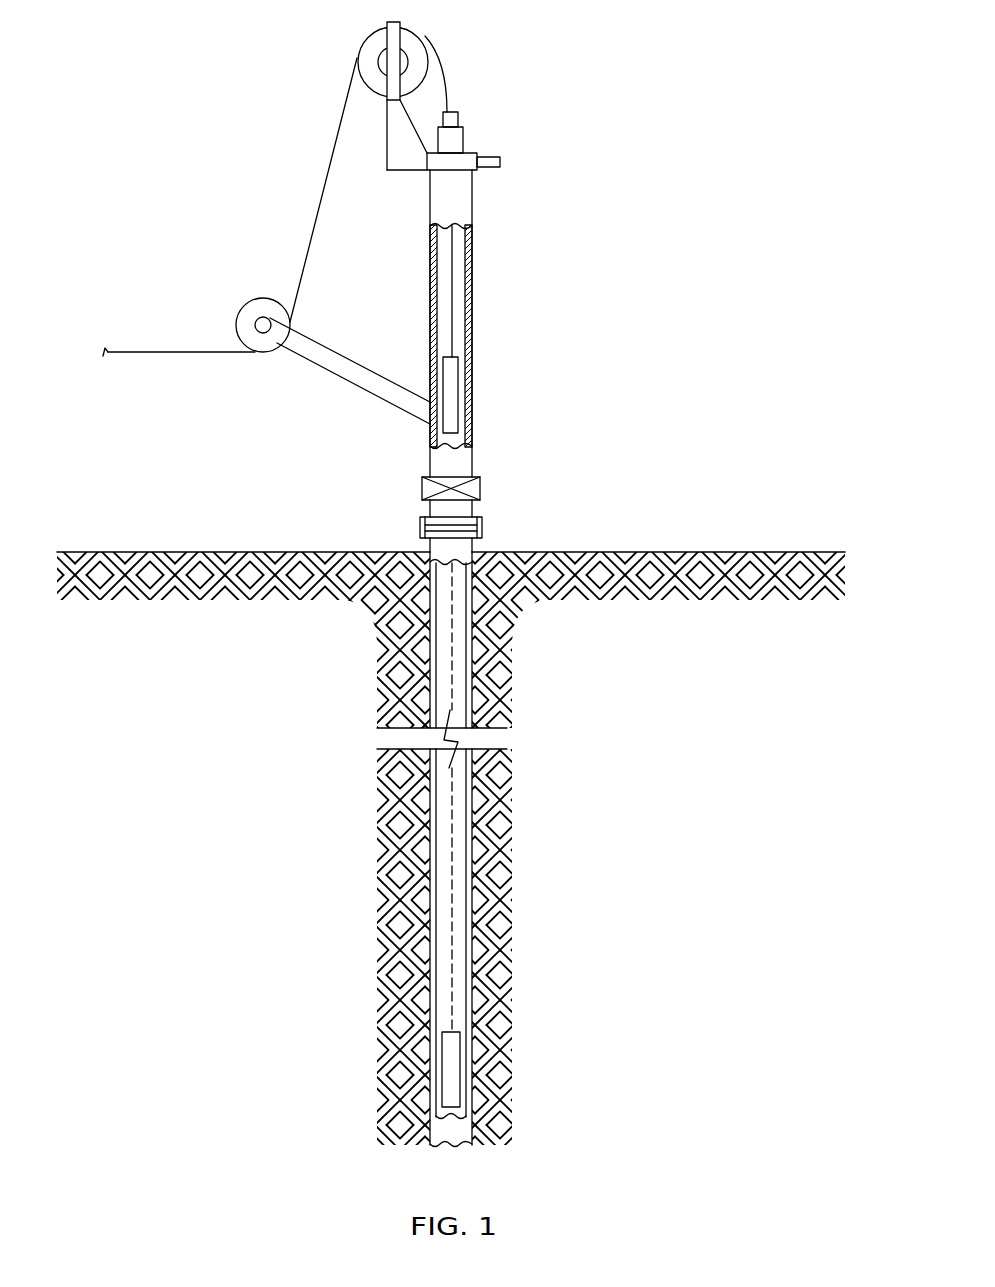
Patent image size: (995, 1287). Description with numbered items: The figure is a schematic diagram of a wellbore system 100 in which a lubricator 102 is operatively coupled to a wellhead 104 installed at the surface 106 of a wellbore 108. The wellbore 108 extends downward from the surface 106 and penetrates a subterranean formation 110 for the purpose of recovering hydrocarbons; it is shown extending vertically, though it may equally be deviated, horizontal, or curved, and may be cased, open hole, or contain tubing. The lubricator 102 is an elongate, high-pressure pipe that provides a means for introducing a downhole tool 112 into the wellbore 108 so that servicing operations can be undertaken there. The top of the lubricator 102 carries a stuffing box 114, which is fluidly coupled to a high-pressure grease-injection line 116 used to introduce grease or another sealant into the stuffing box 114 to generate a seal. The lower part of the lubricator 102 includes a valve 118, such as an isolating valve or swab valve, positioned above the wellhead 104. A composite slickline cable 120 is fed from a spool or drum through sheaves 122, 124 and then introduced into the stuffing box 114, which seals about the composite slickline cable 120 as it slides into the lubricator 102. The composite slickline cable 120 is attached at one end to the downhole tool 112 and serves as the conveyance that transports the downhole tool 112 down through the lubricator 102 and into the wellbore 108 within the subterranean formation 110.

The wellbore system 100 is at (609, 154).
The lubricator 102 is at (430, 288).
The wellhead 104 is at (473, 547).
The surface 106 is at (642, 552).
The wellbore 108 is at (442, 662).
The subterranean formation 110 is at (213, 703).
The downhole tool 112 is at (455, 392).
The stuffing box 114 is at (463, 138).
The high-pressure grease-injection line 116 is at (487, 167).
The valve 118 is at (488, 490).
The composite slickline cable 120 is at (448, 75).
The sheave 122 is at (262, 300).
The sheave 124 is at (376, 82).